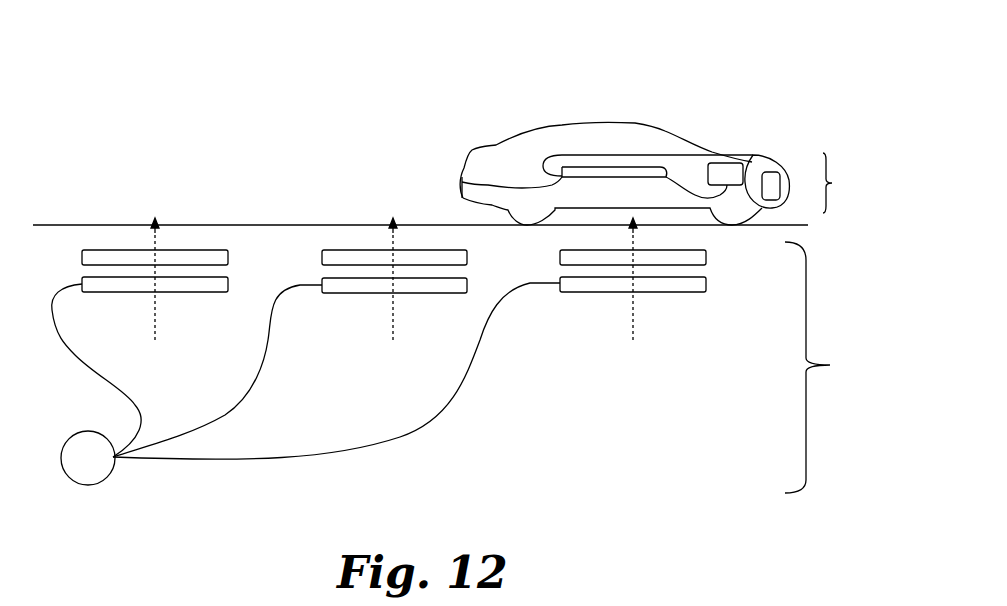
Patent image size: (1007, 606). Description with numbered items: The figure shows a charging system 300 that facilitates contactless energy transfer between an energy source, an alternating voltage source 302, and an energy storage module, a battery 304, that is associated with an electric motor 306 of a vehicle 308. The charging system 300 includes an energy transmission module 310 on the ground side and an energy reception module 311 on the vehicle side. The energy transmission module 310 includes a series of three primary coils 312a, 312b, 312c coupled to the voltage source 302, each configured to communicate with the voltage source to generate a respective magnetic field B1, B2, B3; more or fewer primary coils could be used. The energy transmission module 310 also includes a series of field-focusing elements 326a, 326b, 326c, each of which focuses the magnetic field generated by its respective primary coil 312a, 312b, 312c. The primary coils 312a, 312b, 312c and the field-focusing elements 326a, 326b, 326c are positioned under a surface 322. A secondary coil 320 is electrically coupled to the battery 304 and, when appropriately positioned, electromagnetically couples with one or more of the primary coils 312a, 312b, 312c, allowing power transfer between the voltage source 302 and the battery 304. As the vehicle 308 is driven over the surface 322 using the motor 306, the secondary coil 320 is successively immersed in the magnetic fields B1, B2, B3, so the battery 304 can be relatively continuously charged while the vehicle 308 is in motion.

The charging system 300 is at (733, 91).
The alternating voltage source 302 is at (72, 434).
The battery 304 is at (747, 176).
The electric motor 306 is at (789, 170).
The vehicle 308 is at (657, 127).
The energy transmission module 310 is at (467, 367).
The energy reception module 311 is at (850, 183).
The primary coil 312a is at (165, 292).
The primary coil 312b is at (403, 293).
The primary coil 312c is at (643, 292).
The secondary coil 320 is at (466, 185).
The surface 322 is at (375, 226).
The field-focusing element 326a is at (228, 257).
The field-focusing element 326b is at (467, 257).
The field-focusing element 326c is at (706, 257).
The magnetic field B1 is at (153, 307).
The magnetic field B2 is at (392, 308).
The magnetic field B3 is at (631, 308).